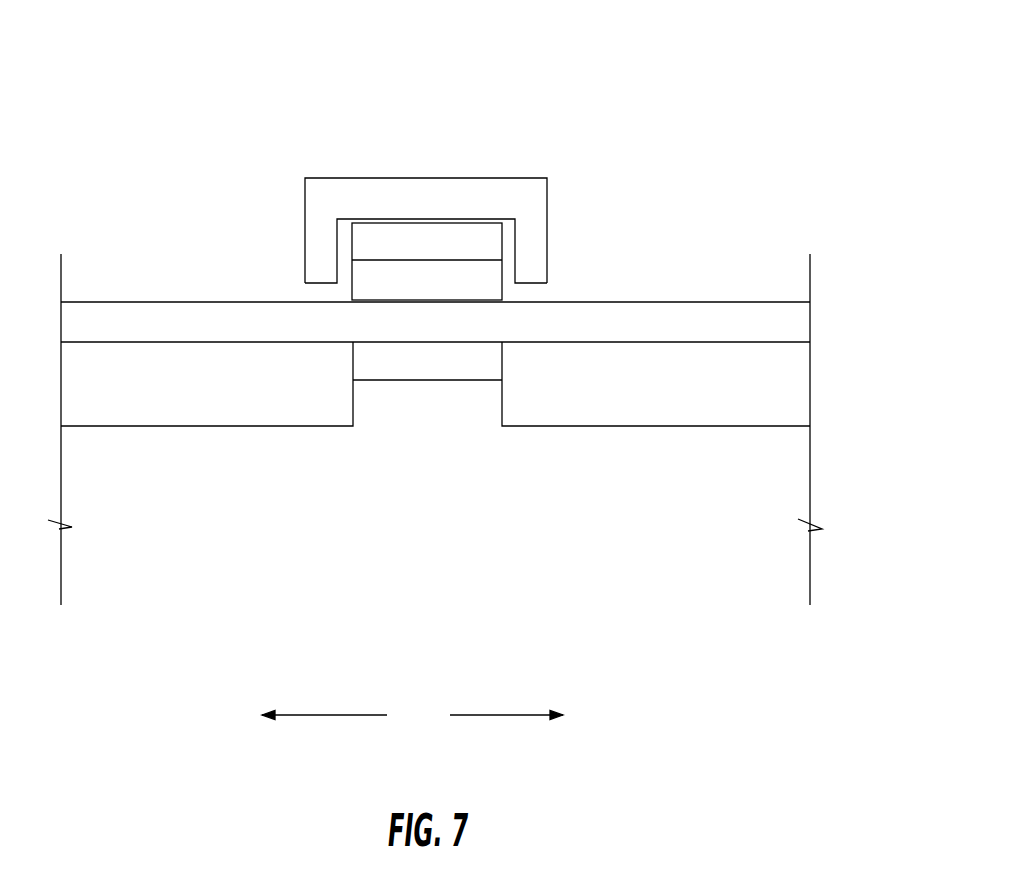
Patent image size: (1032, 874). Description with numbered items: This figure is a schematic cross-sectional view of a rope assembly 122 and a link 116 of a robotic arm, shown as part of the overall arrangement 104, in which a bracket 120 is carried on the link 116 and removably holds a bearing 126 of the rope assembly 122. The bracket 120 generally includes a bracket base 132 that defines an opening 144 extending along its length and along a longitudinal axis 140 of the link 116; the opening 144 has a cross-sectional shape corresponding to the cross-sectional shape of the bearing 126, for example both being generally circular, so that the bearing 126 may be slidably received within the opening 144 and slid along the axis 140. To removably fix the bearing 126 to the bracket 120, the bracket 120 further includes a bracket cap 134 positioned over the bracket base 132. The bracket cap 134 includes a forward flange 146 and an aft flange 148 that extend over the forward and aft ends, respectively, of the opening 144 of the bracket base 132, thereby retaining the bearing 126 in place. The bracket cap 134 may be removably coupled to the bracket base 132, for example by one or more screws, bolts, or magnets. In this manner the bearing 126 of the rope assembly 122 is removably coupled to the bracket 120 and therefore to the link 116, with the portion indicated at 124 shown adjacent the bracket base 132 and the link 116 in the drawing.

The semiconductor device 104 is at (740, 110).
The link 116 is at (765, 490).
The bracket 120 is at (242, 212).
The rope assembly 122 is at (708, 262).
The insulating layer 124 is at (747, 310).
The bearing 126 is at (363, 355).
The bracket base 132 is at (363, 406).
The bracket cap 134 is at (460, 202).
The longitudinal axis 140 is at (412, 717).
The opening 144 is at (483, 357).
The forward flange 146 is at (547, 248).
The aft flange 148 is at (303, 250).